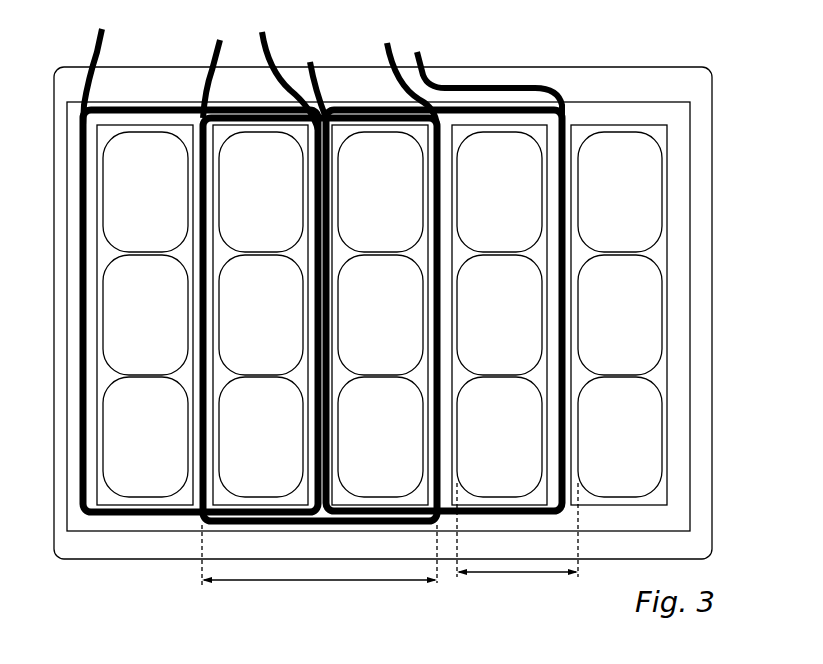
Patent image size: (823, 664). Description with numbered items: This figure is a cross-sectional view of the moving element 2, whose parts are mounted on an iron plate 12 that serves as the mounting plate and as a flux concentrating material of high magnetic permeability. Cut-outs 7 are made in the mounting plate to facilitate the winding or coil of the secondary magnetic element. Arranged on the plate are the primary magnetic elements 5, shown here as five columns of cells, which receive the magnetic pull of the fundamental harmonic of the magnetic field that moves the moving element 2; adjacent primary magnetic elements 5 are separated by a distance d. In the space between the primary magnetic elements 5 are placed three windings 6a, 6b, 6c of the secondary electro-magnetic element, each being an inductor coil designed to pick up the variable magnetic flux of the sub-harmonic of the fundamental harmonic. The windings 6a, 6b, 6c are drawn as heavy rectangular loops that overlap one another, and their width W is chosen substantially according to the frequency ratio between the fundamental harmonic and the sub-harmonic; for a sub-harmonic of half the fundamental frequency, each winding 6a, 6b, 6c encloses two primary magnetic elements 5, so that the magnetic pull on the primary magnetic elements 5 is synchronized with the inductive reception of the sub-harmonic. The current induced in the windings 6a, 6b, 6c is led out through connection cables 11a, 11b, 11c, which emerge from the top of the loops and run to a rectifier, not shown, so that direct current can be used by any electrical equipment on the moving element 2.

The moving element 2 is at (562, 30).
The primary magnetic elements 5 is at (139, 201).
The winding of secondary magnetic element 6a is at (137, 513).
The winding of secondary magnetic element 6b is at (283, 528).
The winding of secondary magnetic element 6c is at (495, 513).
The cut-outs 7 is at (607, 113).
The connection cable 11a is at (106, 45).
The connection cable 11b is at (212, 57).
The connection cable 11c is at (320, 63).
The iron plate 12 is at (680, 67).